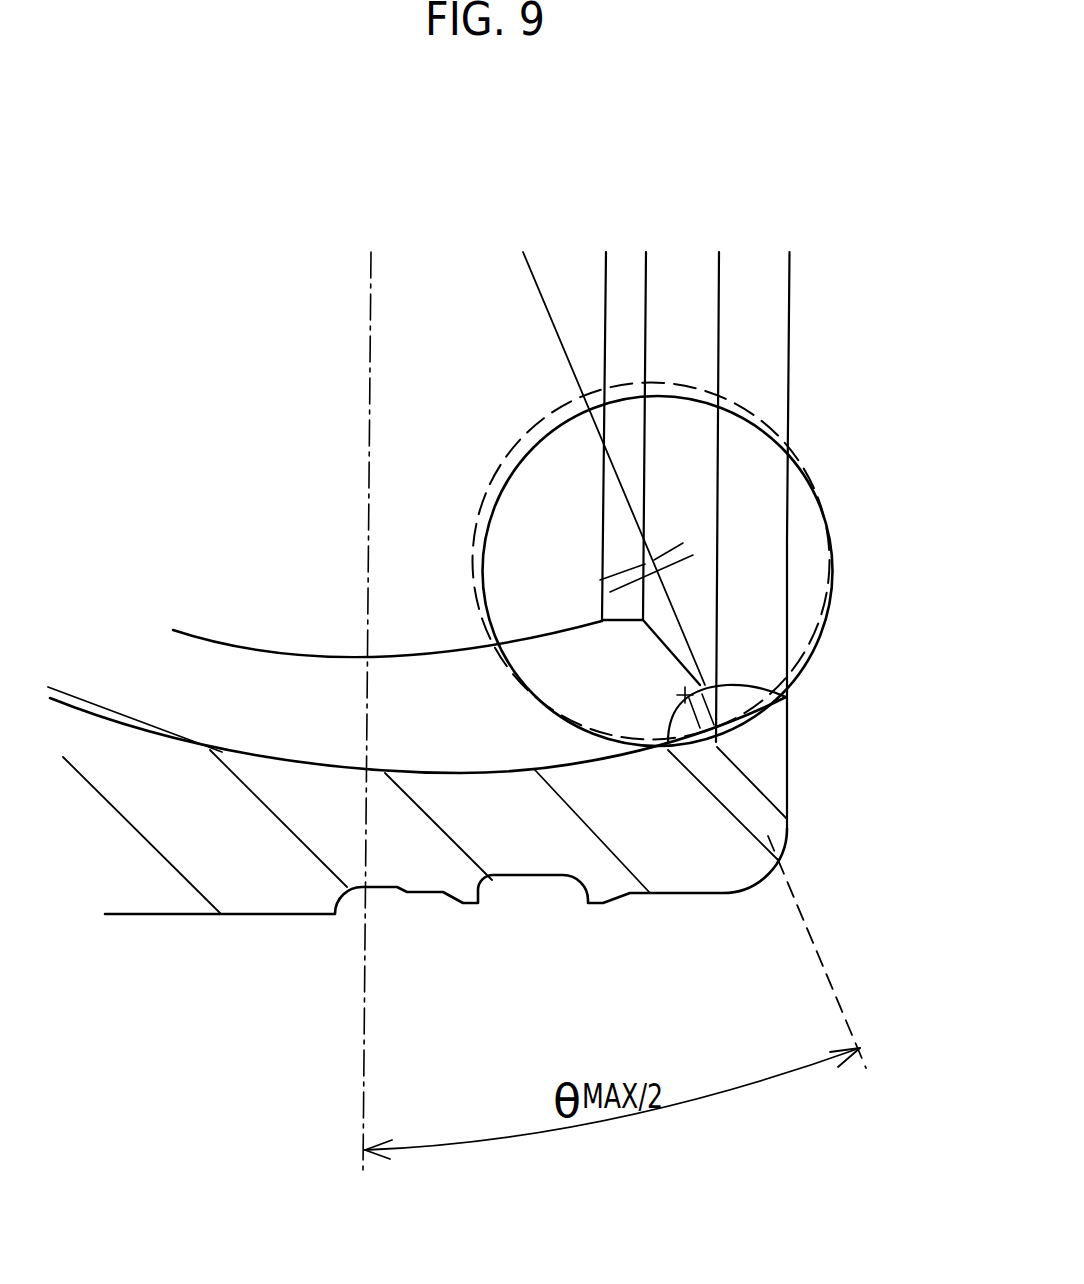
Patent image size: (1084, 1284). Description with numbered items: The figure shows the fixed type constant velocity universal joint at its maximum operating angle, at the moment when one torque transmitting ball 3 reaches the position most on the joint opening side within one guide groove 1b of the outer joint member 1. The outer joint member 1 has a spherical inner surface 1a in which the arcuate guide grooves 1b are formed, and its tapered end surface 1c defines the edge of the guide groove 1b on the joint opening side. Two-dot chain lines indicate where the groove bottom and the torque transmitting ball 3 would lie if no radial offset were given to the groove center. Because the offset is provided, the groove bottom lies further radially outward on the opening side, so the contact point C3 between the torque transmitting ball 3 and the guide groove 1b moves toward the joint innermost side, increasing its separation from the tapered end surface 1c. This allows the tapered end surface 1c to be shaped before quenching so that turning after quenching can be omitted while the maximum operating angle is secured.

The outer joint member 1 is at (501, 803).
The spherical inner surface 1a is at (332, 653).
The guide groove 1b is at (472, 772).
The tapered end surface 1c is at (658, 648).
The torque transmitting ball 3 is at (830, 620).
The contact point C3 is at (786, 697).